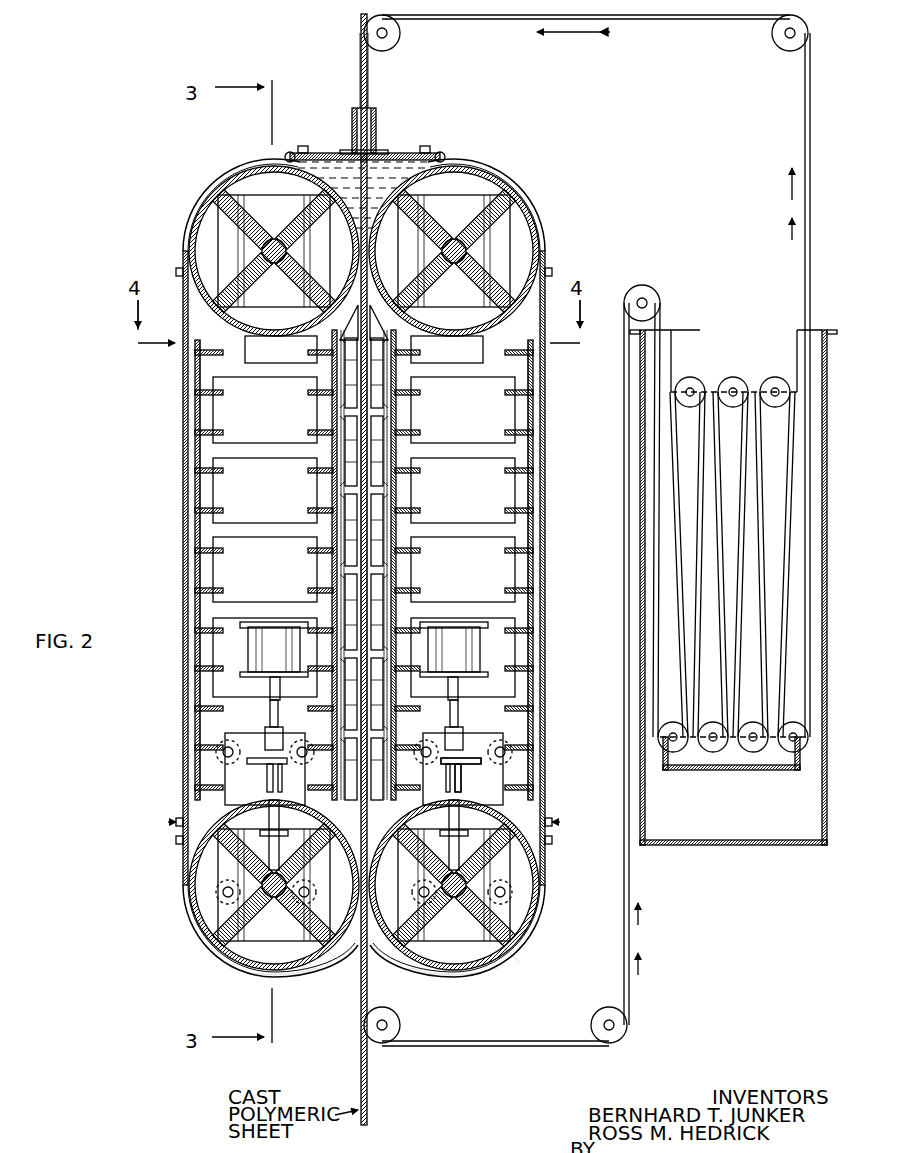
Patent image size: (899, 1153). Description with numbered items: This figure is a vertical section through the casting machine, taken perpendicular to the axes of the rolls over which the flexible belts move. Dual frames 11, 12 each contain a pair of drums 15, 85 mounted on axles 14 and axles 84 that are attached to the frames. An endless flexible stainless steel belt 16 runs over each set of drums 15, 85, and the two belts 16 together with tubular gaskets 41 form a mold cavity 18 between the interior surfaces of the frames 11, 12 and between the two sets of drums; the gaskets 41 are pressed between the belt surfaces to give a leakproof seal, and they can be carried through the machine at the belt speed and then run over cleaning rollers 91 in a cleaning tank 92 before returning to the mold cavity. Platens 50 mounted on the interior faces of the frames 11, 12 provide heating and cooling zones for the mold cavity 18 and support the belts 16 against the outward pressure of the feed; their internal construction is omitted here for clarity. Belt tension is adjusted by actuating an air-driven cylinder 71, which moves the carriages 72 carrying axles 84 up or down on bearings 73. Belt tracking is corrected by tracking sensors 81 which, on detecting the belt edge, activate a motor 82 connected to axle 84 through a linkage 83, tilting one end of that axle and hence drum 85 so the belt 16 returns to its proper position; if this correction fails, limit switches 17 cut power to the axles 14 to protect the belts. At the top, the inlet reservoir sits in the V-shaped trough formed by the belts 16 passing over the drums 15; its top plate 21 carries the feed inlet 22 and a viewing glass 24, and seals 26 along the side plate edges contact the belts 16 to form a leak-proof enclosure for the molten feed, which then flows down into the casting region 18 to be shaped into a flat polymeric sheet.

The frame 11 is at (208, 412).
The frame 12 is at (548, 442).
The axle 14 is at (277, 266).
The drum 15 is at (238, 182).
The endless flexible stainless steel belt 16 is at (186, 570).
The limit switch 17 is at (168, 822).
The mold cavity 18 is at (386, 545).
The top plate 21 is at (410, 150).
The feed inlet 22 is at (377, 124).
The viewing glass 24 is at (342, 150).
The seal 26 is at (286, 156).
The tubular gasket 41 is at (363, 72).
The platen 50 is at (343, 378).
The air-driven cylinder 71 is at (274, 640).
The carriage 72 is at (232, 888).
The bearing 73 is at (222, 752).
The tracking sensor 81 is at (178, 273).
The motor 82 is at (470, 765).
The linkage 83 is at (466, 785).
The axle 84 is at (284, 905).
The drum 85 is at (262, 964).
The cleaning roller 91 is at (680, 745).
The cleaning tank 92 is at (757, 838).